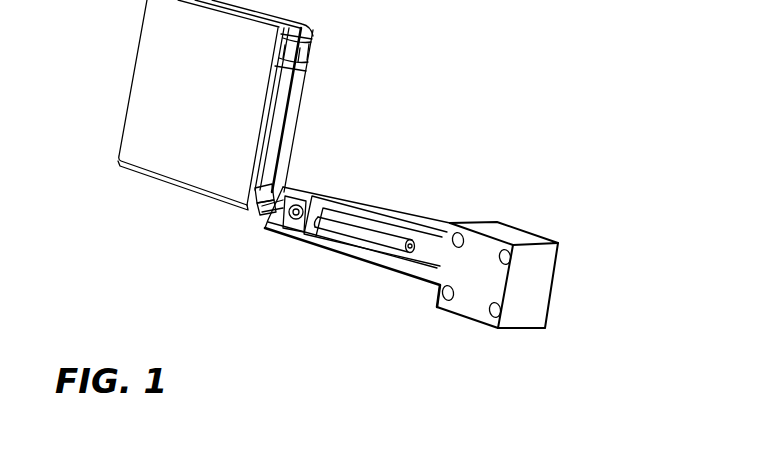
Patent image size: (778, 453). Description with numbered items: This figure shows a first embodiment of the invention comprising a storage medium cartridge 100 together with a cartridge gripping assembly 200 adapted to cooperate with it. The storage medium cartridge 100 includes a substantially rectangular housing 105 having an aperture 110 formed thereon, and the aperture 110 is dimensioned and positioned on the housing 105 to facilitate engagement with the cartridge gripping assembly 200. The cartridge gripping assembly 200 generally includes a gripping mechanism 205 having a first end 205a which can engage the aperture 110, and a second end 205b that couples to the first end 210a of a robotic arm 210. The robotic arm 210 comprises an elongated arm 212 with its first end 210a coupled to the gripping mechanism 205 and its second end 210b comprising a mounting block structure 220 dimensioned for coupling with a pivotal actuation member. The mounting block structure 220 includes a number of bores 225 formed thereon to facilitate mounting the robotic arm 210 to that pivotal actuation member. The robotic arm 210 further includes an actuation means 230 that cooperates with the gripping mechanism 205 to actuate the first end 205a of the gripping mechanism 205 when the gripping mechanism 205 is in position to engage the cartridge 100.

The storage medium cartridge 100 is at (140, 201).
The housing 105 is at (160, 55).
The aperture 110 is at (263, 148).
The cartridge gripping assembly 200 is at (312, 354).
The gripping mechanism 205 is at (289, 174).
The first end of gripping mechanism 205a is at (261, 207).
The second end of gripping mechanism 205b is at (269, 212).
The robotic arm 210 is at (384, 293).
The first end of robotic arm 210a is at (328, 190).
The second end of robotic arm 210b is at (516, 228).
The elongated arm 212 is at (373, 207).
The mounting block structure 220 is at (471, 314).
The bores 225 is at (459, 232).
The actuation means 230 is at (406, 250).